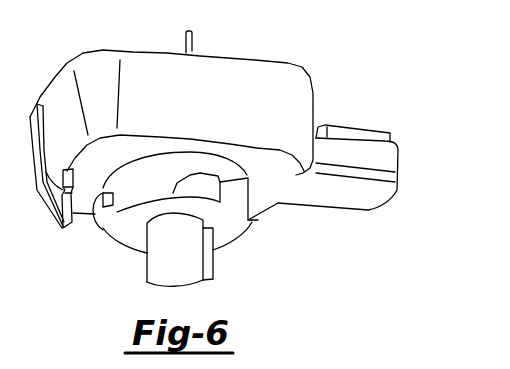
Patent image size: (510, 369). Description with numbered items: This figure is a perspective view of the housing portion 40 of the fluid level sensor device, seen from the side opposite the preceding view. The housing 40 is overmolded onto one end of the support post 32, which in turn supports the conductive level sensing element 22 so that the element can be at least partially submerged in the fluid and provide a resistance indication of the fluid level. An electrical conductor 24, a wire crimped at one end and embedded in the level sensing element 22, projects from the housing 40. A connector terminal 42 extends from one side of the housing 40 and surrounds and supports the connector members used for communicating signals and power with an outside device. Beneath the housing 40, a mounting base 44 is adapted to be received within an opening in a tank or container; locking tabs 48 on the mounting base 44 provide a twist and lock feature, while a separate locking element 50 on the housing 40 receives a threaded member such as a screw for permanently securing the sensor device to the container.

The conductive level sensing element 22 is at (213, 263).
The electrical conductor 24 is at (193, 49).
The support post 32 is at (152, 283).
The housing portion 40 is at (308, 58).
The connector terminal 42 is at (398, 157).
The mounting base 44 is at (245, 200).
The locking tabs 48 is at (248, 179).
The locking element 50 is at (63, 230).